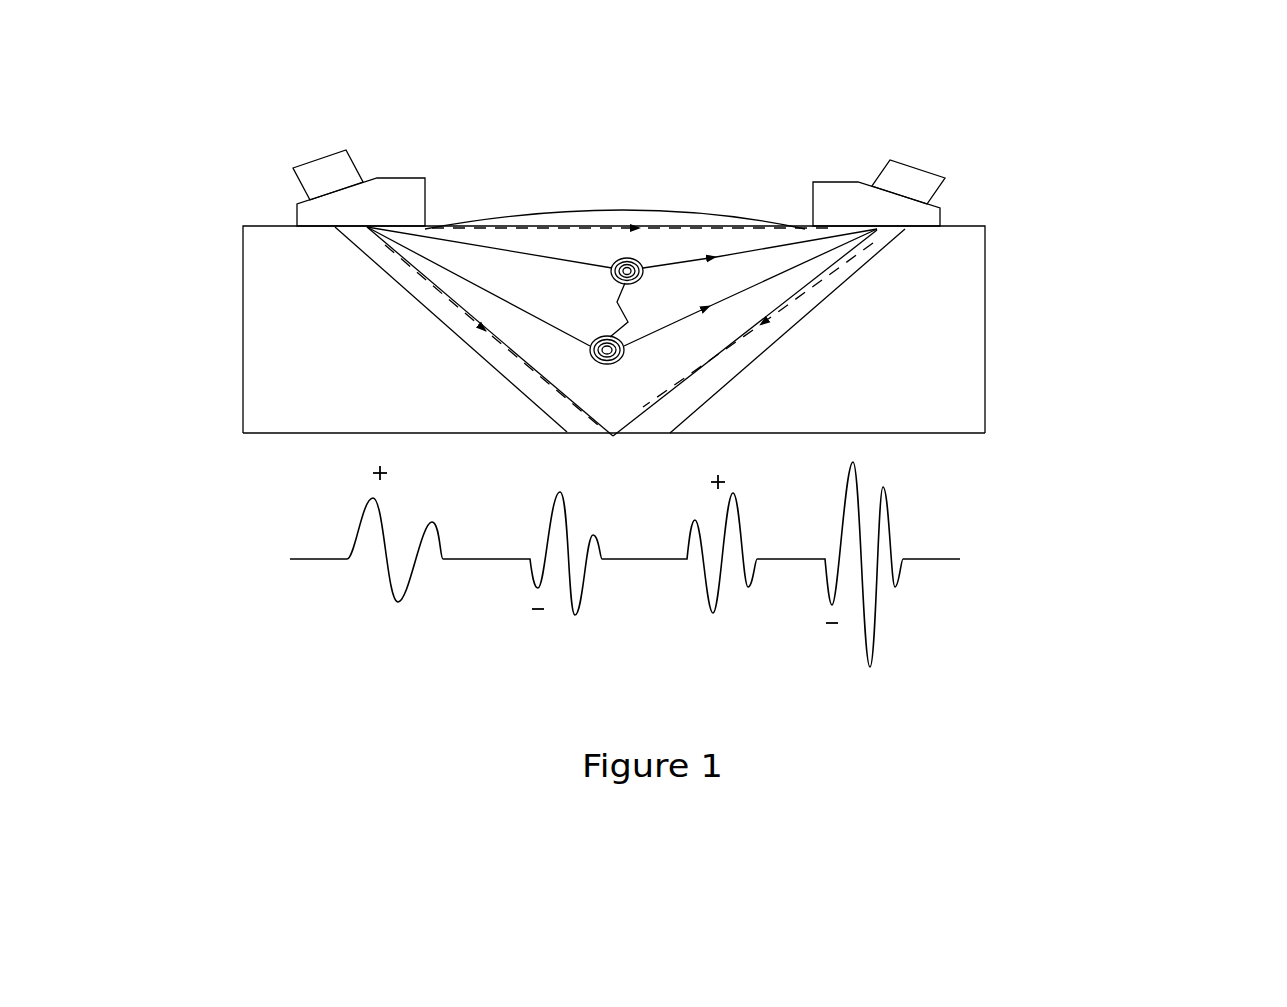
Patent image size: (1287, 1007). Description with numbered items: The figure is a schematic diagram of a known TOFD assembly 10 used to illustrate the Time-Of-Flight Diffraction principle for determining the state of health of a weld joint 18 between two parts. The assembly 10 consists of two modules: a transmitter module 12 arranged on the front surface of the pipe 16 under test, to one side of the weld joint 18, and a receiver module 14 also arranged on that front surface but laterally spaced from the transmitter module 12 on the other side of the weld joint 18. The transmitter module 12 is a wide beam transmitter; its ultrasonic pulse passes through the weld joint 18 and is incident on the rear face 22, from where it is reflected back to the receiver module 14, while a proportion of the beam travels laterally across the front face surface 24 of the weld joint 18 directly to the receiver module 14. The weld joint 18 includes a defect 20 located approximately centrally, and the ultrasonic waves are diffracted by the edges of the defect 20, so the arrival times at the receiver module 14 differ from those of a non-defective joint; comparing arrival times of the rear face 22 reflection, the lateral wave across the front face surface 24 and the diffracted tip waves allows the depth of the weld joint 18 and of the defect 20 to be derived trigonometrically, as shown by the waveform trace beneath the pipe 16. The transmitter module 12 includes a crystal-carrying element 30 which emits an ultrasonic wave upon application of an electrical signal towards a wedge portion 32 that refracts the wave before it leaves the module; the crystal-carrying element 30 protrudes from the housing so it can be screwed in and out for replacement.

The TOFD assembly 10 is at (1092, 197).
The transmitter module 12 is at (284, 187).
The receiver module 14 is at (970, 167).
The pipe 16 is at (336, 348).
The weld joint 18 is at (660, 360).
The defect 20 is at (622, 291).
The rear face 22 is at (853, 437).
The front face surface 24 is at (507, 222).
The crystal-carrying element 30 is at (328, 177).
The wedge portion 32 is at (330, 226).